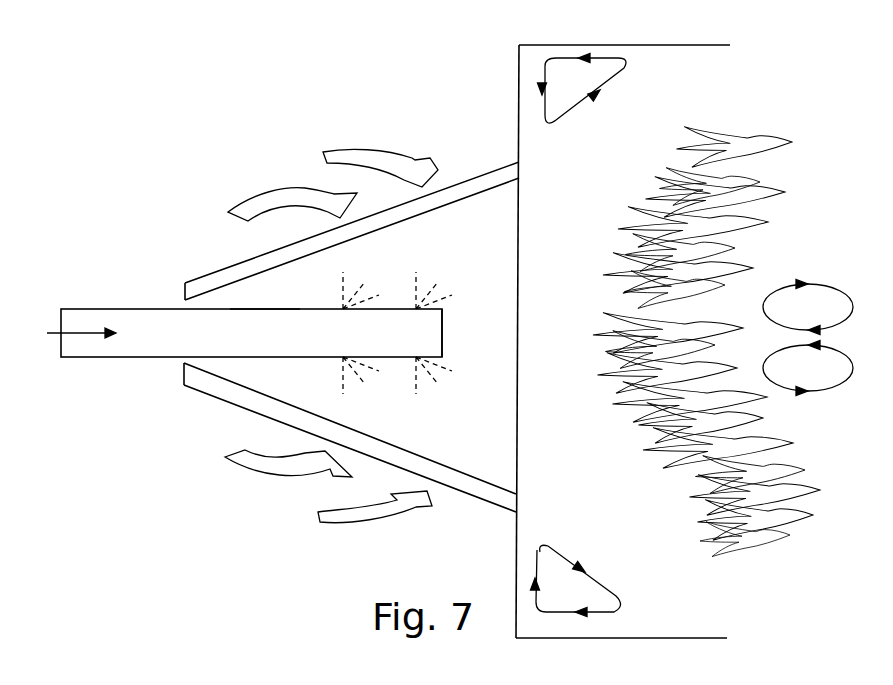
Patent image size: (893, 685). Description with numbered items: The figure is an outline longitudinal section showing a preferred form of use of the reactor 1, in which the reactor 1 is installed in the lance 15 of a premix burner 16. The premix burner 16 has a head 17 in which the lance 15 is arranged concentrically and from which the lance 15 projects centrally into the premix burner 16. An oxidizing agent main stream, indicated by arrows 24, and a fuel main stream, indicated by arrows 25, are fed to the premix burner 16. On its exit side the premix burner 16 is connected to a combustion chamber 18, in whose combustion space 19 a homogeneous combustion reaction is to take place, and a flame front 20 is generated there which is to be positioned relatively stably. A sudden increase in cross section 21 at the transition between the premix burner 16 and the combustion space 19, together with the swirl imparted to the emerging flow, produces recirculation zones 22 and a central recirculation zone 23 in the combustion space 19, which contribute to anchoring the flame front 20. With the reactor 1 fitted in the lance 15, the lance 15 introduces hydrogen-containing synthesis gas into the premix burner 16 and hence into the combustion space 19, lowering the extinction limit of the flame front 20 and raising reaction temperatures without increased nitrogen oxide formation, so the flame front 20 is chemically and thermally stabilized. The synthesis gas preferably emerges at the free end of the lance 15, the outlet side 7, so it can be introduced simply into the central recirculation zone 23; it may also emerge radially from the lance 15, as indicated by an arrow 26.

The reactor 1 is at (120, 345).
The outlet side 7 is at (445, 334).
The lance 15 is at (262, 299).
The premix burner 16 is at (485, 165).
The head 17 is at (183, 362).
The combustion chamber 18 is at (696, 628).
The combustion space 19 is at (614, 485).
The flame front 20 is at (740, 229).
The sudden increase in cross section 21 is at (519, 128).
The recirculation zones 22 is at (585, 93).
The central recirculation zone 23 is at (822, 321).
The arrows indicating oxidizing agent main stream 24 is at (290, 197).
The arrows indicating fuel main stream 25 is at (383, 156).
The arrow indicating radial emergence of synthesis gas 26 is at (458, 366).